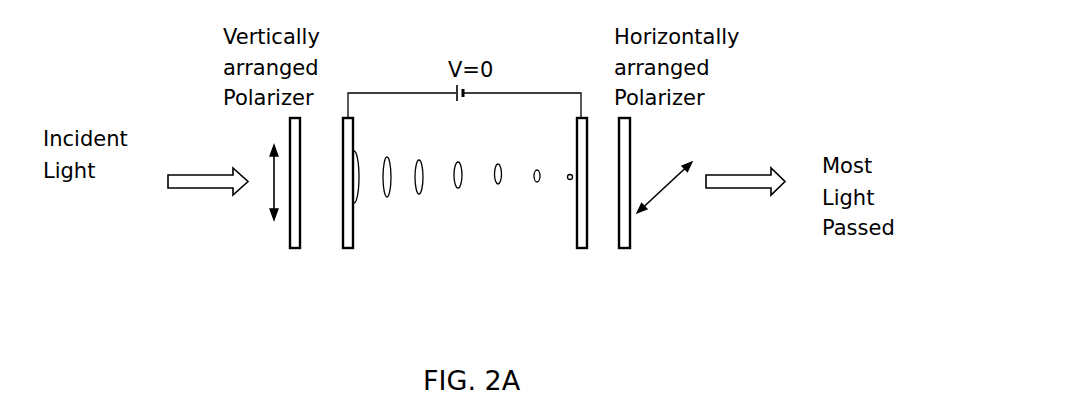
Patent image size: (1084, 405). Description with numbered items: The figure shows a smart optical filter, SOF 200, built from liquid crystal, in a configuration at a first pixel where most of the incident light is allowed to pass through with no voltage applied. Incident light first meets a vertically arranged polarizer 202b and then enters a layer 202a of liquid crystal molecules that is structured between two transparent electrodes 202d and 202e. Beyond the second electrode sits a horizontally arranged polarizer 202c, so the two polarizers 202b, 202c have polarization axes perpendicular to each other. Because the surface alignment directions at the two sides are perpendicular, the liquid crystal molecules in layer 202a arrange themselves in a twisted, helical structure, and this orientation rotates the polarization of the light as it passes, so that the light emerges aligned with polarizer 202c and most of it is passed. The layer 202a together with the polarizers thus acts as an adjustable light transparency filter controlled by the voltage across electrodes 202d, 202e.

The smart optical filter (SOF) 200 is at (474, 209).
The layer having liquid crystal molecules 202a is at (473, 245).
The polarizer 202b is at (307, 234).
The polarizer 202c is at (631, 247).
The transparent electrode 202d is at (342, 213).
The transparent electrode 202e is at (587, 213).